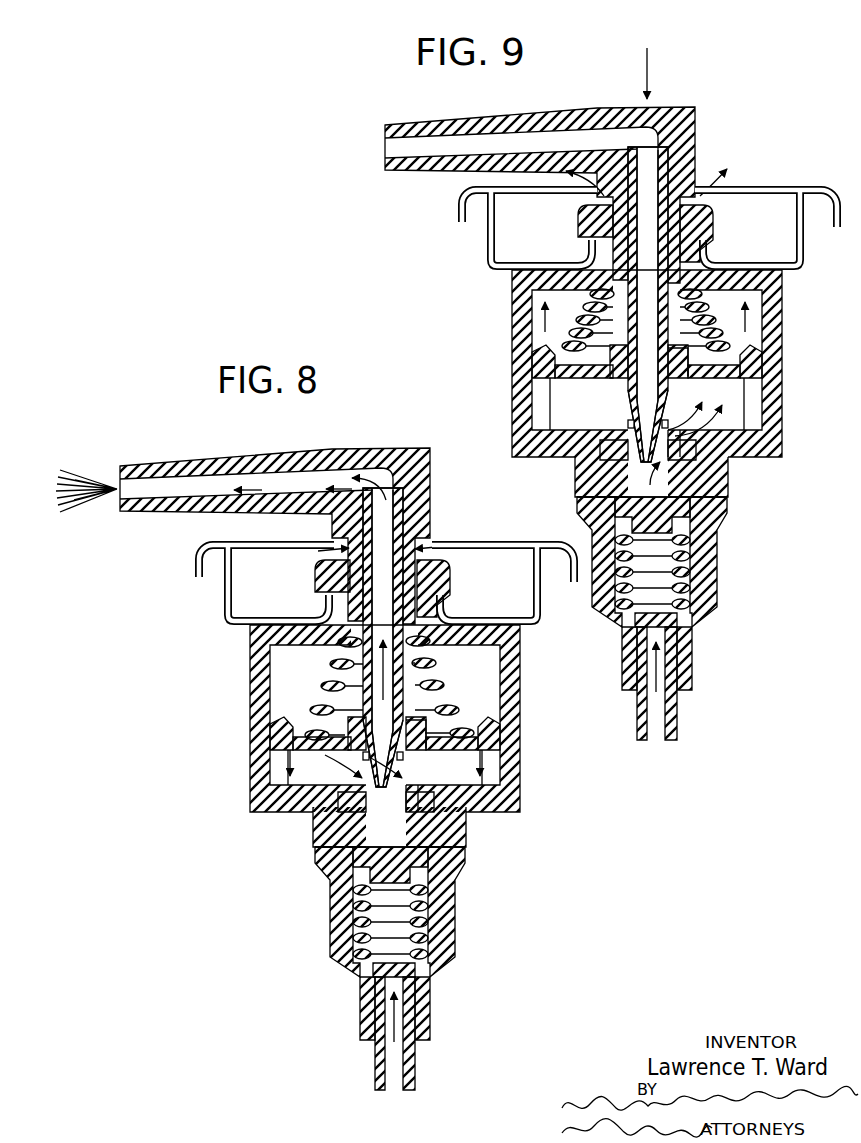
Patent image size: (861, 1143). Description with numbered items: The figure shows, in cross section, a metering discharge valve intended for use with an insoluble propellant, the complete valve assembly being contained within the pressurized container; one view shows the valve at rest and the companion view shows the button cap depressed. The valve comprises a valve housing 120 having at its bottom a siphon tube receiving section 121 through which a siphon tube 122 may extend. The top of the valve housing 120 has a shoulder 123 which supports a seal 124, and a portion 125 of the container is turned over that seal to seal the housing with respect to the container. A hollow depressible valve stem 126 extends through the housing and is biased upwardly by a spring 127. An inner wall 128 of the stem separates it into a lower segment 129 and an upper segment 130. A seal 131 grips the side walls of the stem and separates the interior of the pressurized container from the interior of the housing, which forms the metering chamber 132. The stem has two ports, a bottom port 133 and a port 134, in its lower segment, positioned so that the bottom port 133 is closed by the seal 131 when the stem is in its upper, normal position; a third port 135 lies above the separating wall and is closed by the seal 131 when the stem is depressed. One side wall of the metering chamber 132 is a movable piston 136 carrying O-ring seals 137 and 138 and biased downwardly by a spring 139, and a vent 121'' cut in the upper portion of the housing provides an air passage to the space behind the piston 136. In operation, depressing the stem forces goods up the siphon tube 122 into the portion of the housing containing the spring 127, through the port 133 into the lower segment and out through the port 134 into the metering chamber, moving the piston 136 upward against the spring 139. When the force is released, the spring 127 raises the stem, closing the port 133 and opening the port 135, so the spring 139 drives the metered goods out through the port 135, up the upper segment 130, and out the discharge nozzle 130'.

In FIG. 9, the valve housing 120 is at (517, 318).
In FIG. 8, the valve housing 120 is at (256, 683).
In FIG. 9, the siphon tube receiving section 121 is at (685, 658).
In FIG. 8, the siphon tube receiving section 121 is at (366, 1008).
In FIG. 9, the vent 121'' is at (585, 317).
In FIG. 8, the vent 121'' is at (324, 688).
In FIG. 9, the siphon tube 122 is at (677, 722).
In FIG. 8, the siphon tube 122 is at (378, 1068).
In FIG. 9, the shoulder 123 is at (590, 246).
In FIG. 8, the shoulder 123 is at (318, 598).
In FIG. 9, the seal 124 is at (580, 222).
In FIG. 8, the seal 124 is at (318, 576).
In FIG. 9, the portion of the container 125 is at (712, 206).
In FIG. 8, the portion of the container 125 is at (448, 553).
In FIG. 9, the hollow depressible valve stem 126 is at (632, 393).
In FIG. 8, the hollow depressible valve stem 126 is at (430, 640).
In FIG. 9, the spring 127 is at (692, 592).
In FIG. 8, the spring 127 is at (430, 922).
In FIG. 9, the inner wall 128 is at (640, 432).
In FIG. 8, the inner wall 128 is at (402, 780).
In FIG. 9, the lower segment 129 is at (705, 462).
In FIG. 8, the lower segment 129 is at (440, 808).
In FIG. 9, the upper segment 130 is at (621, 306).
In FIG. 8, the upper segment 130 is at (341, 638).
In FIG. 9, the discharge nozzle 130' is at (537, 195).
In FIG. 8, the discharge nozzle 130' is at (275, 536).
In FIG. 9, the seal 131 is at (598, 468).
In FIG. 8, the seal 131 is at (335, 830).
In FIG. 9, the metering chamber 132 is at (550, 405).
In FIG. 8, the metering chamber 132 is at (288, 770).
In FIG. 9, the bottom port 133 is at (712, 492).
In FIG. 8, the bottom port 133 is at (447, 828).
In FIG. 9, the port 134 is at (690, 425).
In FIG. 8, the port 134 is at (402, 763).
In FIG. 9, the third port 135 is at (600, 450).
In FIG. 8, the third port 135 is at (330, 800).
In FIG. 9, the movable piston 136 is at (545, 380).
In FIG. 8, the movable piston 136 is at (272, 744).
In FIG. 9, the O-ring seal 137 is at (762, 357).
In FIG. 8, the O-ring seal 137 is at (497, 730).
In FIG. 9, the O-ring seal 138 is at (686, 380).
In FIG. 8, the O-ring seal 138 is at (425, 715).
In FIG. 9, the spring 139 is at (713, 330).
In FIG. 8, the spring 139 is at (430, 690).